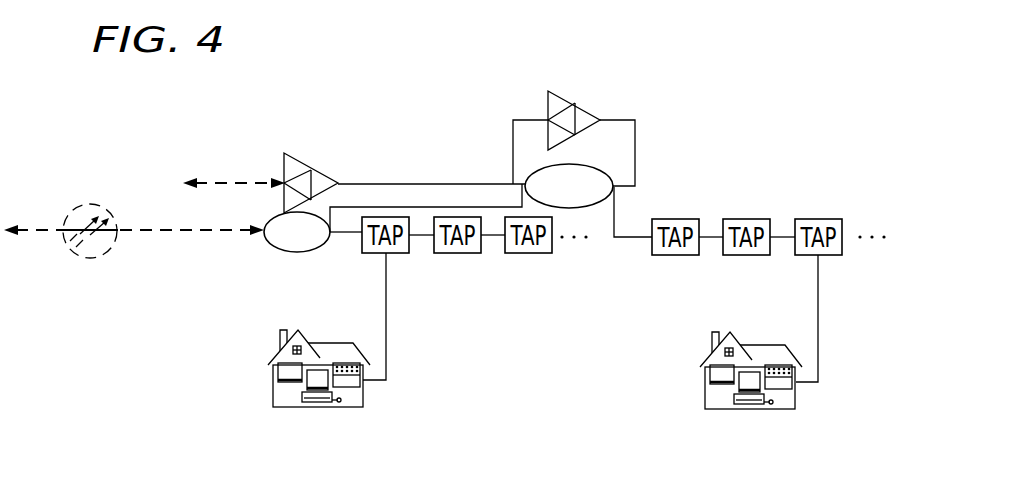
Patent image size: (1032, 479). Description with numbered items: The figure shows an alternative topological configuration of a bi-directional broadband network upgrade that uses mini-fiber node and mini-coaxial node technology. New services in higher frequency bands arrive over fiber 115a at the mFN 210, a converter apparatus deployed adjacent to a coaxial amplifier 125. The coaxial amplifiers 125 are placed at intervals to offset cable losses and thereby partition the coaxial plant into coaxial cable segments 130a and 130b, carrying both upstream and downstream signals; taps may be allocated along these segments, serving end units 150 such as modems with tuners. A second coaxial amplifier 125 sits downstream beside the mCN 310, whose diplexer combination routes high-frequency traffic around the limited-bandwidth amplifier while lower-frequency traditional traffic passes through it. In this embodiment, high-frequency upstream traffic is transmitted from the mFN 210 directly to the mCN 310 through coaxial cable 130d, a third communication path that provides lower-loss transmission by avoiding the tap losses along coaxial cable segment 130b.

The fiber 115a is at (88, 205).
The coaxial amplifier 125 is at (302, 163).
The coaxial cable segment 130a is at (230, 182).
The coaxial cable segment 130b is at (363, 183).
The coaxial cable 130d is at (428, 207).
The mFN 210 is at (280, 250).
The mCN 310 is at (593, 208).
The end unit 150 is at (273, 390).